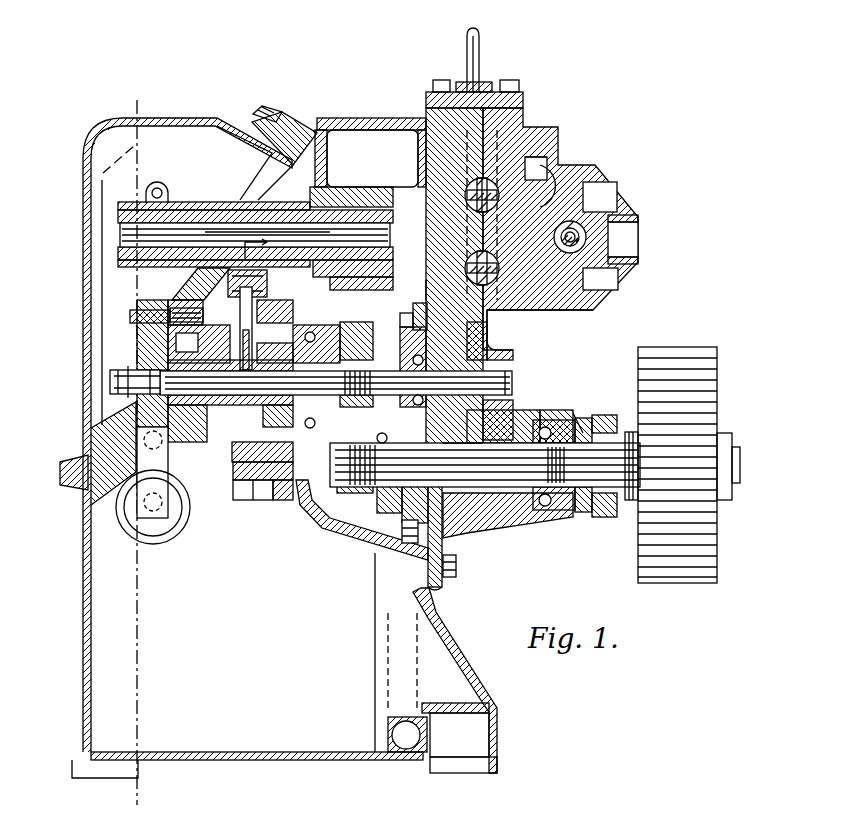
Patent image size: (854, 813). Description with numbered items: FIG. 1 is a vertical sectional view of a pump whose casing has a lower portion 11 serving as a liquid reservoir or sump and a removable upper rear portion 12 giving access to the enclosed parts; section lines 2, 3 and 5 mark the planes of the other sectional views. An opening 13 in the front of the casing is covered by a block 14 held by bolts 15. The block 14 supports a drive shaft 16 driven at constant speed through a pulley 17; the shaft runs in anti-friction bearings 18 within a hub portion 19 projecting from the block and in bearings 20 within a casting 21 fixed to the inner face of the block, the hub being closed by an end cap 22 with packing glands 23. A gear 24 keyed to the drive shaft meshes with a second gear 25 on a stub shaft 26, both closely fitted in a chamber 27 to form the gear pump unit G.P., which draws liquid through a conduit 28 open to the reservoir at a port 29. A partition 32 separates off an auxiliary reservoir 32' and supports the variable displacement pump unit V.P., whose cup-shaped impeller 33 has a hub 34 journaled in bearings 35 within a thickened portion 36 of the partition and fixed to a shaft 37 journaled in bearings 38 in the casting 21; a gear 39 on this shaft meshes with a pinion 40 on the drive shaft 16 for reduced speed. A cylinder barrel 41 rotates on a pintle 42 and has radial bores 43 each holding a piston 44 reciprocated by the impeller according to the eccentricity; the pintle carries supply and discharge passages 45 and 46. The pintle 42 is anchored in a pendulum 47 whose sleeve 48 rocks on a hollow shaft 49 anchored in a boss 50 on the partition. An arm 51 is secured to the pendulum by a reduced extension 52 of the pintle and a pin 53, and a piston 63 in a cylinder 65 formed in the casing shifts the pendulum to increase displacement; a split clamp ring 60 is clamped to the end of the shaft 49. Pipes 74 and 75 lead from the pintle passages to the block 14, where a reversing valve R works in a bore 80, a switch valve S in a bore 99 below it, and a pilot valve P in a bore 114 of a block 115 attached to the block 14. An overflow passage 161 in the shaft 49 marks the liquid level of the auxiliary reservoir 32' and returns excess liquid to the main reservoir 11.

The section line 2- 2 is at (157, 89).
The section line 3- 3 is at (445, 33).
The section line 5- 5 is at (540, 106).
The lower portion of casing 11 is at (252, 732).
The upper rear portion of casing 12 is at (85, 243).
The opening 13 is at (426, 160).
The block 14 is at (507, 130).
The bolts 15 is at (456, 560).
The drive shaft 16 is at (500, 460).
The pulley 17 is at (698, 397).
The anti-friction bearings 18 is at (548, 510).
The hub portion 19 is at (560, 410).
The bearings 20 is at (363, 518).
The casting 21 is at (422, 522).
The end cap 22 is at (607, 517).
The packing glands 23 is at (598, 422).
The gear 24 is at (510, 517).
The second gear 25 is at (490, 329).
The stub shaft 26 is at (500, 378).
The chamber 27 is at (428, 288).
The conduit 28 is at (397, 666).
The port 29 is at (398, 733).
The partition 32 is at (350, 349).
The auxiliary reservoir 32' is at (345, 541).
The rotary impeller 33 is at (282, 297).
The hub 34 is at (340, 325).
The anti-friction bearings 35 is at (313, 323).
The thickened portion 36 is at (312, 492).
The shaft 37 is at (278, 418).
The anti-friction bearings 38 is at (402, 367).
The gear 39 is at (372, 328).
The pinion 40 is at (345, 505).
The cylinder barrel 41 is at (240, 378).
The pintle 42 is at (233, 378).
The cylinder bore 43 is at (275, 331).
The piston 44 is at (252, 304).
The upper longitudinal passage 45 is at (213, 340).
The lower longitudinal passage 46 is at (200, 405).
The pendulum 47 is at (160, 333).
The sleeve 48 is at (188, 203).
The hollow shaft 49 is at (280, 233).
The boss 50 is at (350, 192).
The arm 51 is at (162, 488).
The reduced extension 52 is at (110, 380).
The pin 53 is at (130, 316).
The split clamp ring 60 is at (132, 202).
The piston 63 is at (170, 520).
The cylinder 65 is at (137, 540).
The pipe 74 is at (420, 228).
The pipe 75 is at (414, 246).
The bore 80 is at (490, 186).
The bore 99 is at (620, 282).
The bore 114 is at (592, 224).
The block 115 is at (642, 241).
The overflow passage 161 is at (212, 235).
The variable displacement pump unit V.P. is at (232, 296).
The gear pump unit G.P. is at (460, 422).
The reversing valve R is at (532, 150).
The pilot valve P is at (587, 238).
The switch valve S is at (540, 308).